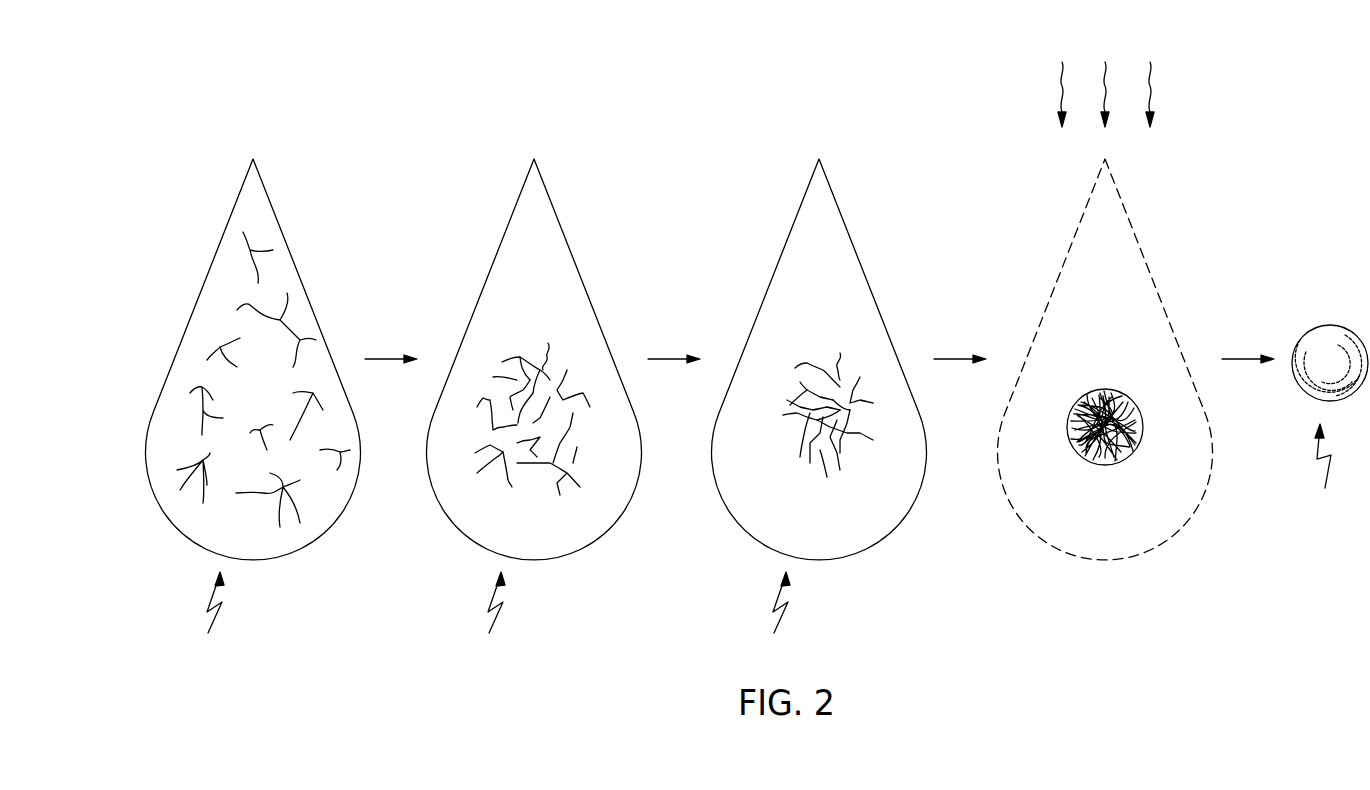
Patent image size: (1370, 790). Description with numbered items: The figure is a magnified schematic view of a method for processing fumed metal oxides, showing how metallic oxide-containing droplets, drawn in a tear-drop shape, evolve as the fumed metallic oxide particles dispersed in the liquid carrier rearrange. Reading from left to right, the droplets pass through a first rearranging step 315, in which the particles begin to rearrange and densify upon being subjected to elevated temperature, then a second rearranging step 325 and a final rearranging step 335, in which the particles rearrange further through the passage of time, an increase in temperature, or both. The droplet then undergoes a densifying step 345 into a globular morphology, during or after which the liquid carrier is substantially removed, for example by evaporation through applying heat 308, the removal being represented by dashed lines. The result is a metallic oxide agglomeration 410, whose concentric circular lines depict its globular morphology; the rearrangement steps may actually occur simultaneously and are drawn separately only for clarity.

The heat 308 is at (1152, 92).
The first rearranging step 315 is at (388, 359).
The second rearranging step 325 is at (671, 359).
The final rearranging step 335 is at (957, 359).
The densifying step 345 is at (1244, 359).
The metallic oxide agglomeration 410 is at (1330, 421).